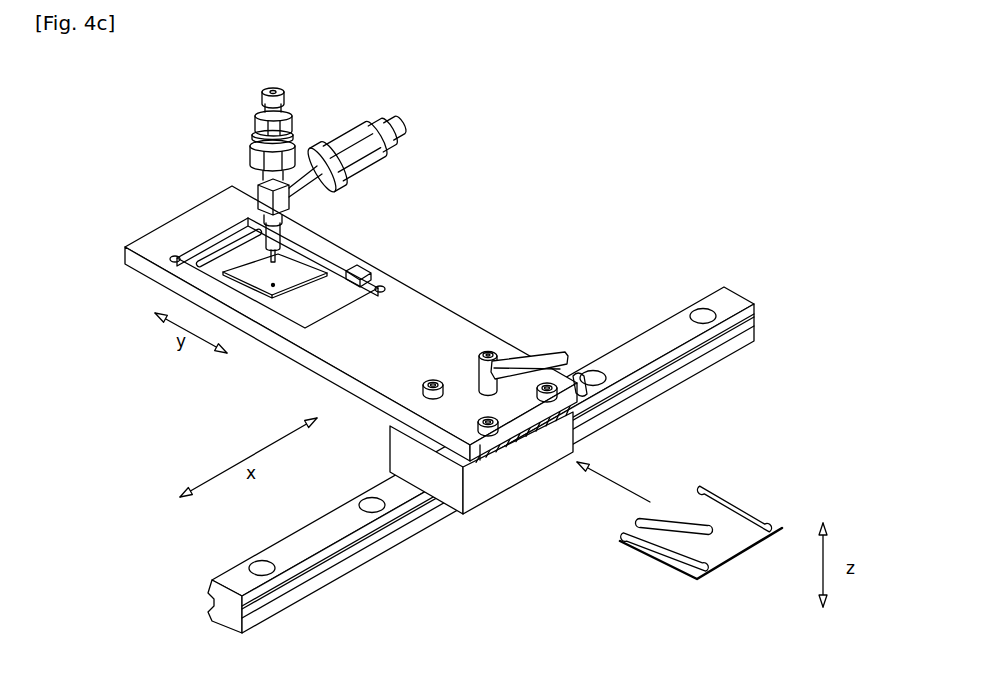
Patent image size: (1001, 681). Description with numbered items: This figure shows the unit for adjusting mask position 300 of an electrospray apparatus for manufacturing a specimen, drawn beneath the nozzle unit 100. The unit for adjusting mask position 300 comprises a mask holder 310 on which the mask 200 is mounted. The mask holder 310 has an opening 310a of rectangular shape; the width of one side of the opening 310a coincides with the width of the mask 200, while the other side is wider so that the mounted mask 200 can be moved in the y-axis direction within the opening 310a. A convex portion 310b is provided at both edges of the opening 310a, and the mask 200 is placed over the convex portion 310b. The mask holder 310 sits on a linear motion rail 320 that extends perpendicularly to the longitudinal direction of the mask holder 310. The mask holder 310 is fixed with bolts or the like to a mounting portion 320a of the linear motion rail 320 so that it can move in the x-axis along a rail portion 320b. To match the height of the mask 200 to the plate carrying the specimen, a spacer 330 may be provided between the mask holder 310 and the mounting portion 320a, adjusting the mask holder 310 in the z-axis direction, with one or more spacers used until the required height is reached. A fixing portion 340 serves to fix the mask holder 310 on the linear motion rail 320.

The nozzle unit 100 is at (262, 218).
The mask 200 is at (225, 272).
The unit for adjusting mask position 300 is at (759, 220).
The mask holder 310 is at (425, 343).
The opening 310a is at (300, 318).
The convex portion 310b is at (368, 263).
The linear motion rail 320 is at (757, 325).
The mounting portion 320a is at (477, 497).
The rail portion 320b is at (340, 525).
The spacer 330 is at (757, 507).
The fixing portion 340 is at (505, 348).